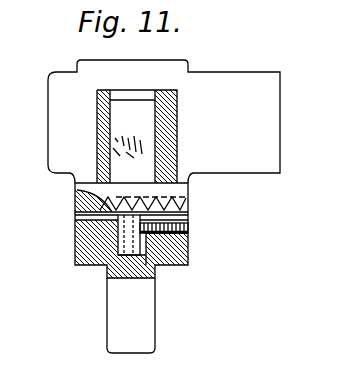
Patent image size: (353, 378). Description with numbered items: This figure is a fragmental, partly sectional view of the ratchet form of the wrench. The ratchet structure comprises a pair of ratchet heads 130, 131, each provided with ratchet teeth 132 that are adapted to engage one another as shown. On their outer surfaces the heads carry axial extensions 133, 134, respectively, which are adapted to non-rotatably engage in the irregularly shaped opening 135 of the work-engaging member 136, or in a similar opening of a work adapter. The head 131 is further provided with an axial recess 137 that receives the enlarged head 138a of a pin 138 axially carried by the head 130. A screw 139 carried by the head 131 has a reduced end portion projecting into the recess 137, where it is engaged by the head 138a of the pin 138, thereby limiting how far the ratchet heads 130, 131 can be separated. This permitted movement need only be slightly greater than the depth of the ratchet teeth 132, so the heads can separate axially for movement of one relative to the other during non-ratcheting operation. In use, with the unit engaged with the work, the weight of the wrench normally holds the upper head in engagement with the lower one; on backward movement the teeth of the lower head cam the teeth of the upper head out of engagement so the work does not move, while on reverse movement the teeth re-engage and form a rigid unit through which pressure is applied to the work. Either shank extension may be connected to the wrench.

The ratchet head 130 is at (182, 191).
The ratchet head 131 is at (188, 250).
The ratchet teeth 132 is at (78, 188).
The axial extension 133 is at (146, 113).
The axial extension 134 is at (148, 300).
The irregularly shaped opening 135 is at (156, 91).
The work-engaging member 136 is at (97, 117).
The axial recess 137 is at (118, 237).
The pin 138 is at (118, 219).
The enlarged head of pin 138a is at (112, 263).
The screw 139 is at (150, 228).